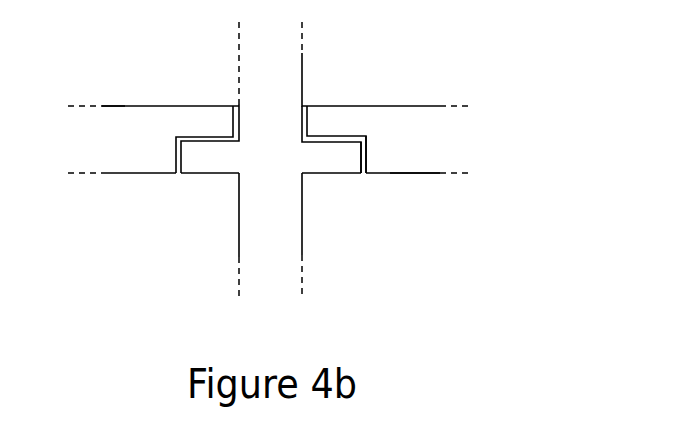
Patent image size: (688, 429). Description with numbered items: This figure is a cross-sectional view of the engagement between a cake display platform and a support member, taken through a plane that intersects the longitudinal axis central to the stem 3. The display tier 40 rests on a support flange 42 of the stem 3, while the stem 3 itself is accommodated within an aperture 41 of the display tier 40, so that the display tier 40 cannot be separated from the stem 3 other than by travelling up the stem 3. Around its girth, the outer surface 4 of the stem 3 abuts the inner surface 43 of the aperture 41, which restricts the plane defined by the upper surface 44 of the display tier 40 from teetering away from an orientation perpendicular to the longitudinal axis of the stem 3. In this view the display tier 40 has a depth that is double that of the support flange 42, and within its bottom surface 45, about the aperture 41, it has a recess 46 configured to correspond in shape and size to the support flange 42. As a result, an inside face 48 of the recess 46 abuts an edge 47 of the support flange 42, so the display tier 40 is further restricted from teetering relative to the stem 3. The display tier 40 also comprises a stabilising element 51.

The stem 3 is at (247, 236).
The outer surface 4 is at (239, 198).
The display tier 40 is at (155, 125).
The aperture 41 is at (307, 105).
The support flange 42 is at (333, 163).
The inner surface 43 is at (238, 118).
The upper surface 44 is at (113, 105).
The bottom surface 45 is at (110, 174).
The recess 46 is at (365, 175).
The edge 47 is at (360, 180).
The inside face 48 is at (366, 157).
The stabilising element 51 is at (393, 162).